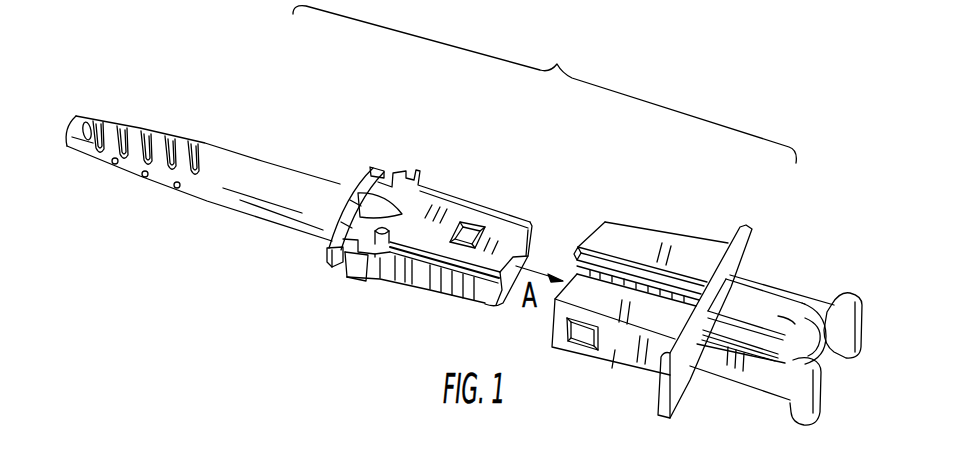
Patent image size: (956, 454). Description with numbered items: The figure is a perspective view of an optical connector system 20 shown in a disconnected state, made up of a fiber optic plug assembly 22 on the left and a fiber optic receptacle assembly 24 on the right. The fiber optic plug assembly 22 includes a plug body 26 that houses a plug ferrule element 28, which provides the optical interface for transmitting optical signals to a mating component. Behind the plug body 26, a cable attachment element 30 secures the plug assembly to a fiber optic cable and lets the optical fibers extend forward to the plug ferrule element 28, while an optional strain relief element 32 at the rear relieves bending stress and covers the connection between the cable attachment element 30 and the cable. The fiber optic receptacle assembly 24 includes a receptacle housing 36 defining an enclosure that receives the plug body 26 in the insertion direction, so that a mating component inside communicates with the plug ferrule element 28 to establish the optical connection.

The optical connector system 20 is at (544, 84).
The fiber optic plug assembly 22 is at (307, 131).
The fiber optic receptacle assembly 24 is at (701, 204).
The plug body 26 is at (446, 224).
The plug ferrule element 28 is at (468, 227).
The cable attachment element 30 is at (372, 168).
The strain relief element 32 is at (258, 165).
The receptacle housing 36 is at (652, 231).